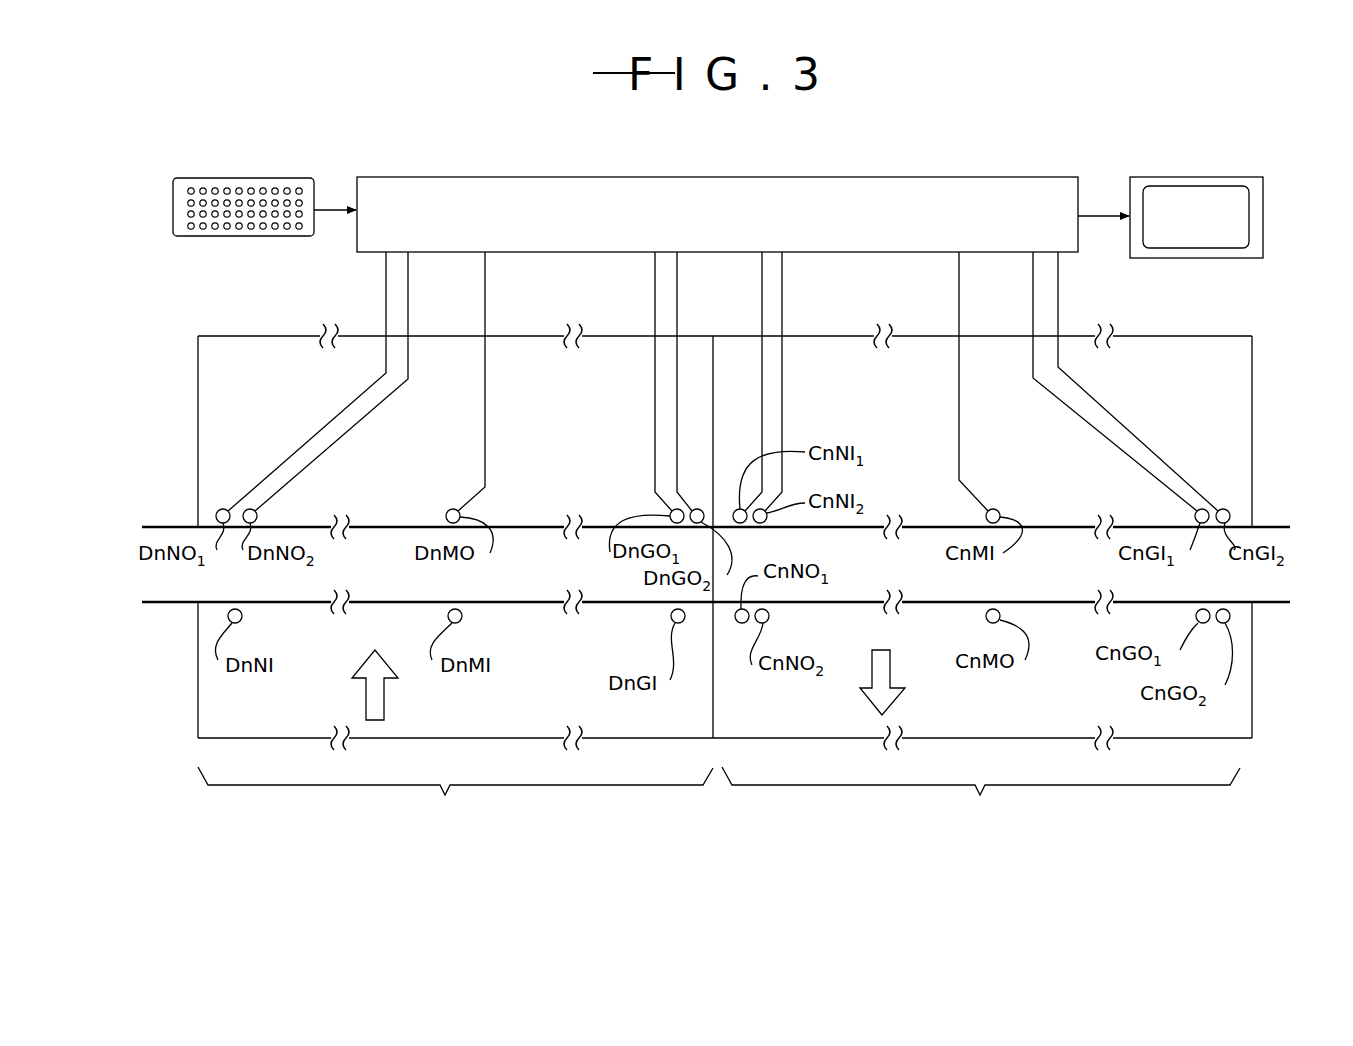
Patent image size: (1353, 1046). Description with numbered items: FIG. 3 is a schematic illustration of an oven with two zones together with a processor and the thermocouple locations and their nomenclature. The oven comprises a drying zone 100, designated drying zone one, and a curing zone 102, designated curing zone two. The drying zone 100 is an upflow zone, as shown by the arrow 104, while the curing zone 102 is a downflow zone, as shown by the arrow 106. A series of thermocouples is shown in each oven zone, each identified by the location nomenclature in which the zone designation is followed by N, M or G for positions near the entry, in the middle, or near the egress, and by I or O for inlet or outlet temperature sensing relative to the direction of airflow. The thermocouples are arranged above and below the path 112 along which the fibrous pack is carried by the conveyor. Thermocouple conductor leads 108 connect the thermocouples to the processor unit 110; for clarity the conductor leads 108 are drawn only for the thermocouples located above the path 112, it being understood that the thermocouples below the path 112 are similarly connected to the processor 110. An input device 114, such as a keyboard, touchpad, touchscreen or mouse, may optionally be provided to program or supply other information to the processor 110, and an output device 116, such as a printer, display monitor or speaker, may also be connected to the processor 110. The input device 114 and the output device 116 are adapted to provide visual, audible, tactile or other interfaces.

The drying zone 100 is at (455, 800).
The curing zone 102 is at (981, 800).
The arrow 104 is at (385, 695).
The arrow 106 is at (882, 672).
The thermocouple conductor leads 108 is at (677, 410).
The processor unit 110 is at (688, 207).
The path 112 is at (191, 578).
The input device 114 is at (250, 192).
The output device 116 is at (1202, 205).